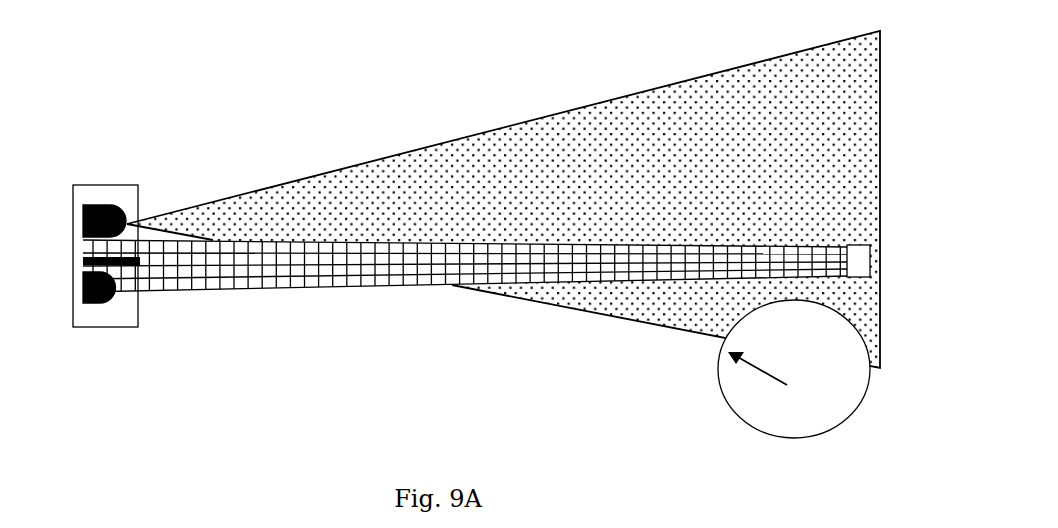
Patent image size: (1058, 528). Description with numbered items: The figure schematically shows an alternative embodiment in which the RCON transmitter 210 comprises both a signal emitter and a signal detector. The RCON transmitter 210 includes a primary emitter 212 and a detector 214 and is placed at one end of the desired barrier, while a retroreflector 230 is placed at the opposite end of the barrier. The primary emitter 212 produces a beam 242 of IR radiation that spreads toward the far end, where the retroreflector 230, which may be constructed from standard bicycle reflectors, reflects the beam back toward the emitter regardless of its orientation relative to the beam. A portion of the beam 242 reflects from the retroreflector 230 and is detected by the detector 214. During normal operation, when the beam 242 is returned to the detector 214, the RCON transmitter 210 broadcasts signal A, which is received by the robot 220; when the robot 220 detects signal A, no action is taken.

The RCON transmitter 210 is at (126, 231).
The primary emitter 212 is at (128, 222).
The detector 214 is at (88, 290).
The robot 220 is at (766, 383).
The retroreflector 230 is at (872, 267).
The beam 242 is at (558, 127).